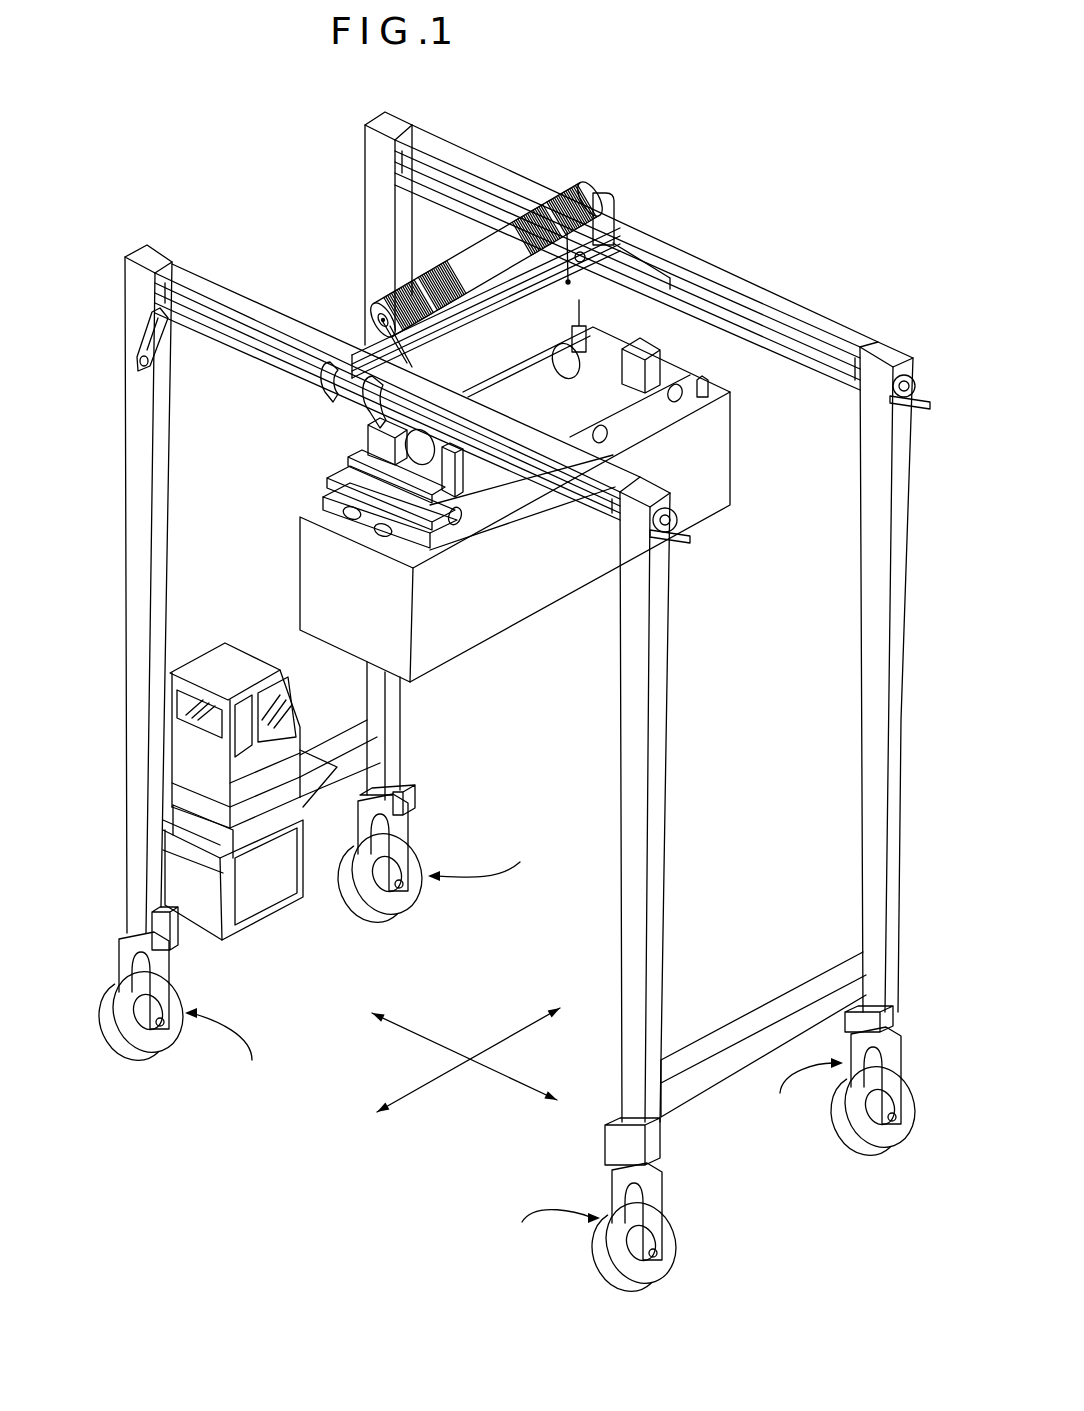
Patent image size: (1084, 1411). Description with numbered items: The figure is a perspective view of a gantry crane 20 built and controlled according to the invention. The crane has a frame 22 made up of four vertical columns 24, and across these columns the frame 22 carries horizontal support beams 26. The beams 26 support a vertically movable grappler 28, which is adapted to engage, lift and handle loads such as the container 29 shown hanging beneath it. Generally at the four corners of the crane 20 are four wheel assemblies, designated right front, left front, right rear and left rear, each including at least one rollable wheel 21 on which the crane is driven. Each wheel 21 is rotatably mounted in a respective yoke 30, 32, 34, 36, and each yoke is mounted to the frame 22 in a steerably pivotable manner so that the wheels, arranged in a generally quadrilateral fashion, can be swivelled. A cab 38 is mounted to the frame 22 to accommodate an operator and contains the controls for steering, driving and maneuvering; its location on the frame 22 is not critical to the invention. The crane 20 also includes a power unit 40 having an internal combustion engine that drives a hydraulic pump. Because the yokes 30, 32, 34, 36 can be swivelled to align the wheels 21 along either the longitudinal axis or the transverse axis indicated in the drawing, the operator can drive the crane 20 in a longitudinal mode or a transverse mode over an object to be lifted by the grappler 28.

The gantry crane 20 is at (618, 97).
The wheel 21 is at (392, 912).
The frame 22 is at (368, 178).
The vertical columns 24 is at (172, 545).
The horizontal support beams 26 is at (207, 282).
The grappler 28 is at (336, 473).
The container 29 is at (528, 578).
The yoke 30 is at (898, 1032).
The yoke 32 is at (405, 828).
The yoke 34 is at (657, 1177).
The yoke 36 is at (134, 945).
The cab 38 is at (214, 665).
The power unit 40 is at (252, 893).